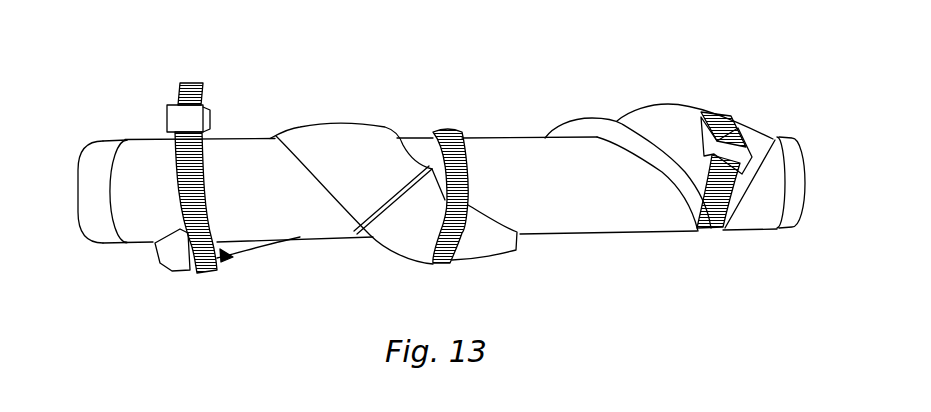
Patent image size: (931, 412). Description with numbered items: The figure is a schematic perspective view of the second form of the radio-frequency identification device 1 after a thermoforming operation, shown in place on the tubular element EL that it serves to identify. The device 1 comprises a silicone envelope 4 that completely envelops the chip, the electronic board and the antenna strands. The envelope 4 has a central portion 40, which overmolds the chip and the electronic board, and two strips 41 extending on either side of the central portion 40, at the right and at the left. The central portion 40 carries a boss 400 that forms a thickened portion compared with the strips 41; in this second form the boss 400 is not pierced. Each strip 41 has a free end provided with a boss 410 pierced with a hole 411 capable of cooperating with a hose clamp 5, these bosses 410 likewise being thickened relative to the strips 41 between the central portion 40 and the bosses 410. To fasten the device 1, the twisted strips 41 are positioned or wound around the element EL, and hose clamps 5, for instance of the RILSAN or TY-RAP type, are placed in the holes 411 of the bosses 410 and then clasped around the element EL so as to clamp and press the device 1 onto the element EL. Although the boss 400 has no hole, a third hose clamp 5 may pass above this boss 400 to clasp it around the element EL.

The radio-frequency identification device 1 is at (474, 78).
The envelope 4 is at (578, 116).
The central portion 40 is at (491, 268).
The strips 41 is at (300, 126).
The boss 400 is at (410, 237).
The boss 410 is at (170, 252).
The hole 411 is at (202, 273).
The hose clamp 5 is at (163, 115).
The tubular element EL is at (123, 217).